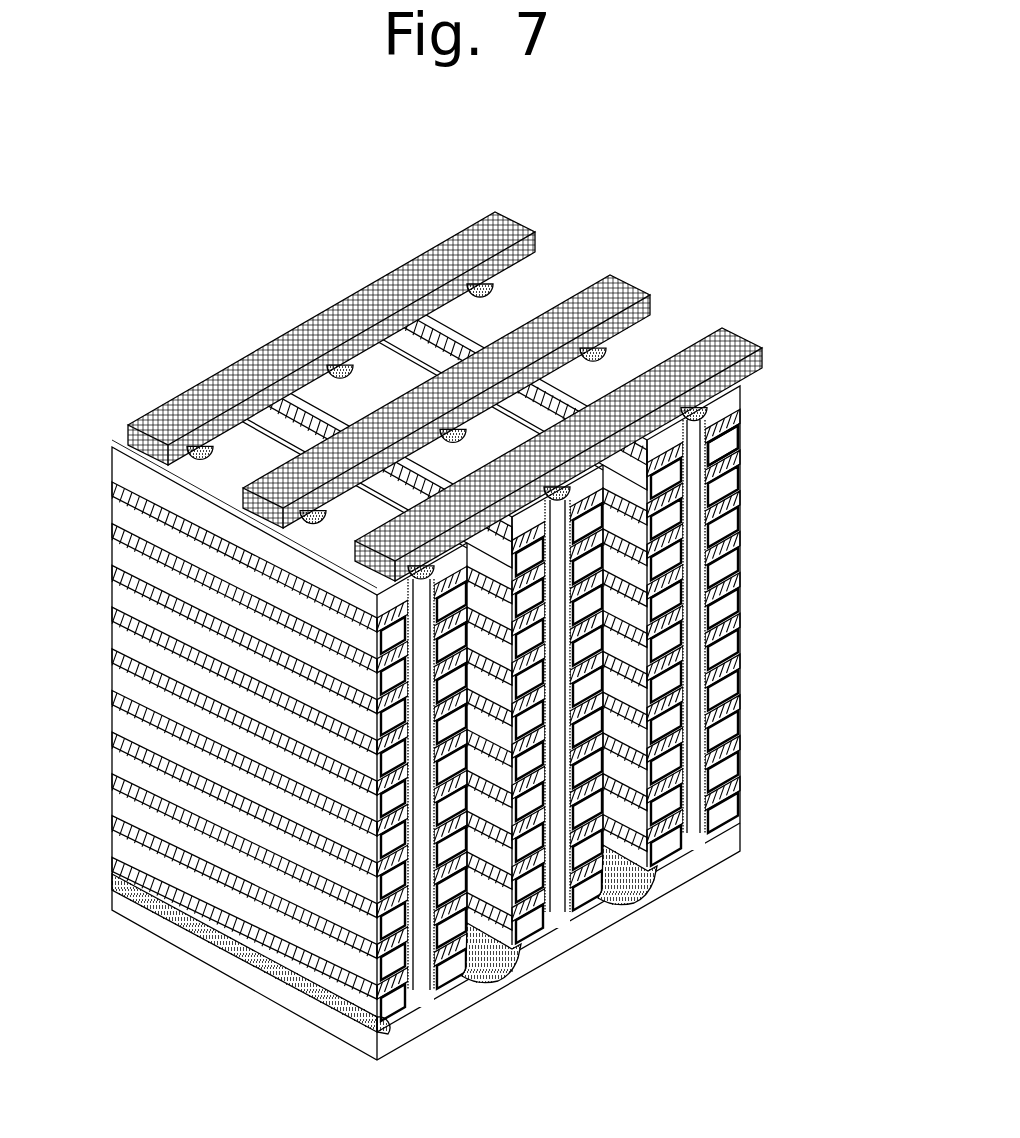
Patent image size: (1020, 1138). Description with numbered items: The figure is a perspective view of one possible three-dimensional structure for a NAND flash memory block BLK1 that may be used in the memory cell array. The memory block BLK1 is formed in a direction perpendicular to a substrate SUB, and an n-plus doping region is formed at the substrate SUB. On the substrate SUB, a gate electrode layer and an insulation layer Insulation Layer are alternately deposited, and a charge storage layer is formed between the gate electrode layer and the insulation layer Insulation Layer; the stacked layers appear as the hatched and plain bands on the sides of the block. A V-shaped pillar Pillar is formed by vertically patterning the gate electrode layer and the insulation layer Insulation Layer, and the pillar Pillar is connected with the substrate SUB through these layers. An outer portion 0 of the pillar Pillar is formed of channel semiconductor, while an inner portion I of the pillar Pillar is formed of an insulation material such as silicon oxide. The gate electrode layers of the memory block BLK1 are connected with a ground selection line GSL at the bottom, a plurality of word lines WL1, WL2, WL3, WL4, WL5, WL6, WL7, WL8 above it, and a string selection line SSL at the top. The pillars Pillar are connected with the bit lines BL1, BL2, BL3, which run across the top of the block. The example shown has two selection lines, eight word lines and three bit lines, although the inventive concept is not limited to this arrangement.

The memory block BLK1 is at (702, 192).
The bit line BL1 is at (497, 222).
The bit line BL2 is at (607, 283).
The bit line BL3 is at (722, 350).
The string selection line SSL is at (112, 487).
The word line WL8 is at (112, 529).
The word line WL7 is at (112, 570).
The word line WL6 is at (112, 612).
The word line WL5 is at (112, 654).
The word line WL4 is at (112, 695).
The word line WL3 is at (112, 737).
The word line WL2 is at (112, 779).
The word line WL1 is at (112, 820).
The ground selection line GSL is at (112, 862).
The substrate SUB is at (112, 900).
The pillar Pillar is at (741, 846).
The insulation layer Insulation Layer is at (733, 663).
The inner portion of the pillar I is at (703, 835).
The outer portion of the pillar 0 is at (690, 833).